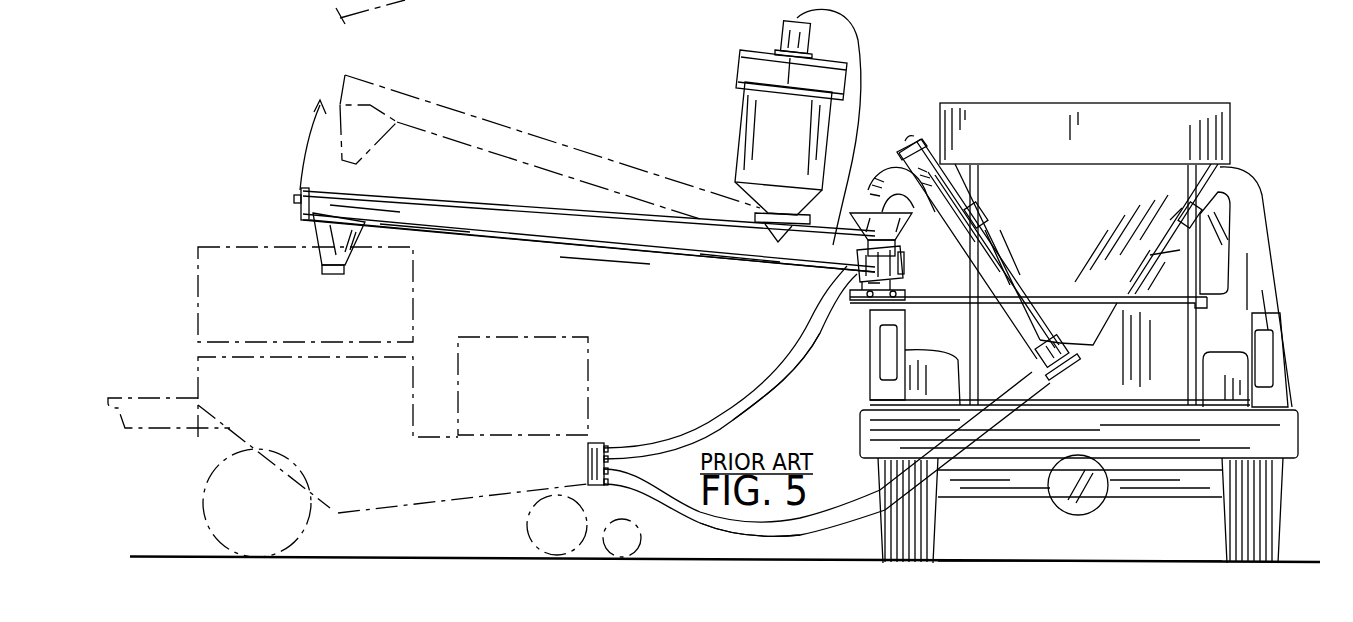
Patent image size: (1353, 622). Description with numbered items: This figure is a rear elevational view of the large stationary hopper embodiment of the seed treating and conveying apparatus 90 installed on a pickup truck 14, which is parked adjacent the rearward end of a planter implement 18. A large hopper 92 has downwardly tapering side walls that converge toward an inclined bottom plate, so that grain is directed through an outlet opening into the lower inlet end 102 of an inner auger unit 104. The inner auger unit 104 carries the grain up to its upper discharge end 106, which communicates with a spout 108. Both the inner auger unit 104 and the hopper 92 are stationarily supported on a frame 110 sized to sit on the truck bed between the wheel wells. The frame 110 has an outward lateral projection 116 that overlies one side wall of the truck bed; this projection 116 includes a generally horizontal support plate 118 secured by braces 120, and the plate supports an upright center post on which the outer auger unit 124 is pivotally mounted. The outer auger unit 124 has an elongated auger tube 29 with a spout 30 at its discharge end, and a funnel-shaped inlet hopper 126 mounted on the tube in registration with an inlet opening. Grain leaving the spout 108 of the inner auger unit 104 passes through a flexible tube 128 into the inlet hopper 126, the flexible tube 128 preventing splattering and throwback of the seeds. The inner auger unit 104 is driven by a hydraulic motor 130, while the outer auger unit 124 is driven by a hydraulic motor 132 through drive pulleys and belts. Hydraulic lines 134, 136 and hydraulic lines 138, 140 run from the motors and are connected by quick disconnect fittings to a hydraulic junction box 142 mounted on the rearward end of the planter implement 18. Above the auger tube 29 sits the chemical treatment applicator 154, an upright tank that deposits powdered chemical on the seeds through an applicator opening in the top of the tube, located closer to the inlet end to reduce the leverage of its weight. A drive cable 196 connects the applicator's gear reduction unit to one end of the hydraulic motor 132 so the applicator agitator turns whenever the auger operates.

The pickup truck 14 is at (1265, 212).
The planter implement 18 is at (238, 247).
The auger tube 29 is at (607, 238).
The spout 30 is at (340, 255).
The seed treating and conveying apparatus 90 is at (1163, 96).
The large hopper 92 is at (1232, 130).
The lower inlet end 102 is at (1060, 345).
The inner auger unit 104 is at (998, 250).
The upper discharge end 106 is at (1063, 122).
The spout 108 is at (905, 158).
The frame 110 is at (1203, 330).
The outward lateral projection 116 is at (925, 305).
The support plate 118 is at (877, 303).
The braces 120 is at (985, 218).
The auger unit 124 is at (497, 203).
The inlet hopper 126 is at (884, 216).
The flexible tube 128 is at (903, 196).
The hydraulic motor 130 is at (1082, 362).
The hydraulic motor 132 is at (860, 262).
The hydraulic line 134 is at (728, 410).
The hydraulic line 136 is at (780, 395).
The hydraulic line 138 is at (834, 508).
The hydraulic line 140 is at (817, 533).
The hydraulic junction box 142 is at (604, 444).
The chemical treatment applicator 154 is at (738, 124).
The drive cable 196 is at (860, 96).